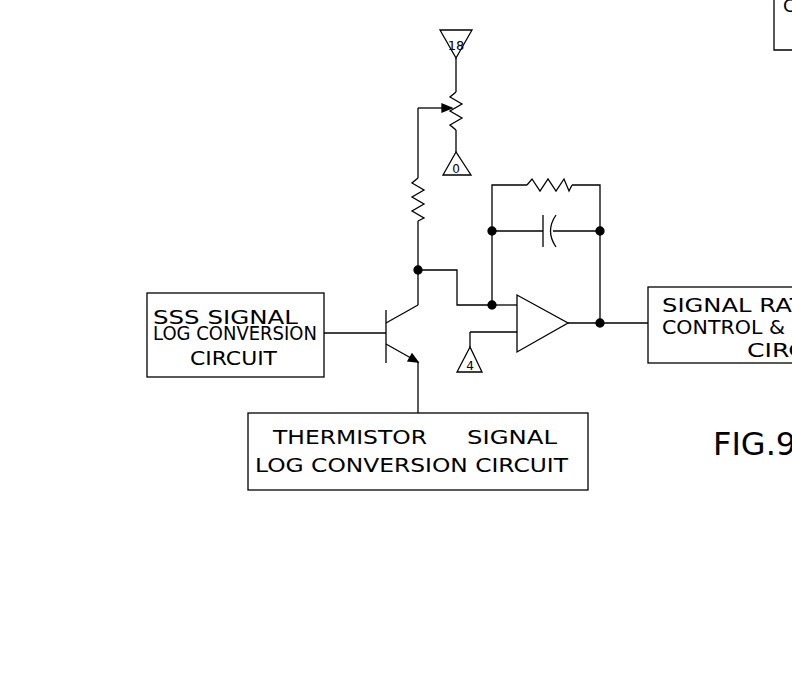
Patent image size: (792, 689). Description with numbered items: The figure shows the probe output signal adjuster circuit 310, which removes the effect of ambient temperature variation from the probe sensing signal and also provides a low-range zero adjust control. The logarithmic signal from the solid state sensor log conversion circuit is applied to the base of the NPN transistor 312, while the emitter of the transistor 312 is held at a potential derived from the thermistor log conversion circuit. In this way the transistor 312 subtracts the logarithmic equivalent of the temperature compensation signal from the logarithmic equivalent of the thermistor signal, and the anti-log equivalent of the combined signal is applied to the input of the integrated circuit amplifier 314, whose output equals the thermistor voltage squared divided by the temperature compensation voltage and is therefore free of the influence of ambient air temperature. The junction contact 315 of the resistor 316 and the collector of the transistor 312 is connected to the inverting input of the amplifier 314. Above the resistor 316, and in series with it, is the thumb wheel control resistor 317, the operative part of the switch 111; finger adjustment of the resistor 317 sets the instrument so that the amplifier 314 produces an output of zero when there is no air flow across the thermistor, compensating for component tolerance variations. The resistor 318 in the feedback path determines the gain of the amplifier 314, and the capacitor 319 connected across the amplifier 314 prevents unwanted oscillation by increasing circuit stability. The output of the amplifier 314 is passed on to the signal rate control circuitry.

The switch 111 is at (432, 92).
The probe output adjuster circuit 310 is at (571, 207).
The NPN transistor 312 is at (375, 303).
The integrated circuit amplifier 314 is at (562, 299).
The junction contact 315 is at (421, 266).
The resistor 316 is at (414, 199).
The thumb wheel control resistor 317 is at (458, 92).
The resistor 318 is at (565, 184).
The capacitor 319 is at (565, 222).